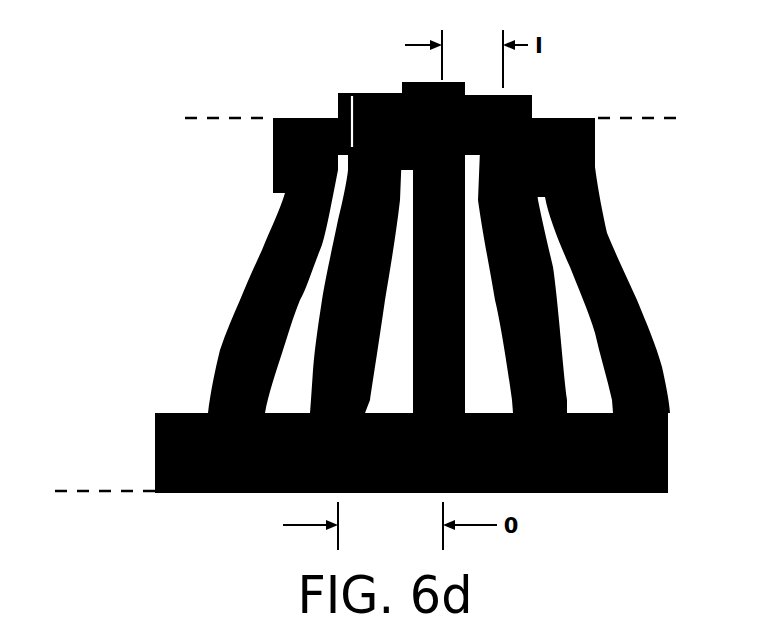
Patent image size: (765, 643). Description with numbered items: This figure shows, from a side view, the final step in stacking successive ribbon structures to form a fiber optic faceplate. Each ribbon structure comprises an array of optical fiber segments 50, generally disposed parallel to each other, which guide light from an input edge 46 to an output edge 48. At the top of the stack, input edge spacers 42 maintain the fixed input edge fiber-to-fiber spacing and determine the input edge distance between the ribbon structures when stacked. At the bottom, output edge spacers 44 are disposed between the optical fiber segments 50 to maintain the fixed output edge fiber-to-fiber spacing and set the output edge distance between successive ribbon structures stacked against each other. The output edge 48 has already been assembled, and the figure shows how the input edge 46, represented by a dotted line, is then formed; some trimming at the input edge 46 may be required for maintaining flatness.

The input edge spacer 42 is at (347, 93).
The output edge spacer 44 is at (163, 413).
The input edge 46 is at (637, 118).
The output edge 48 is at (80, 490).
The optical fiber segments 50 is at (323, 318).